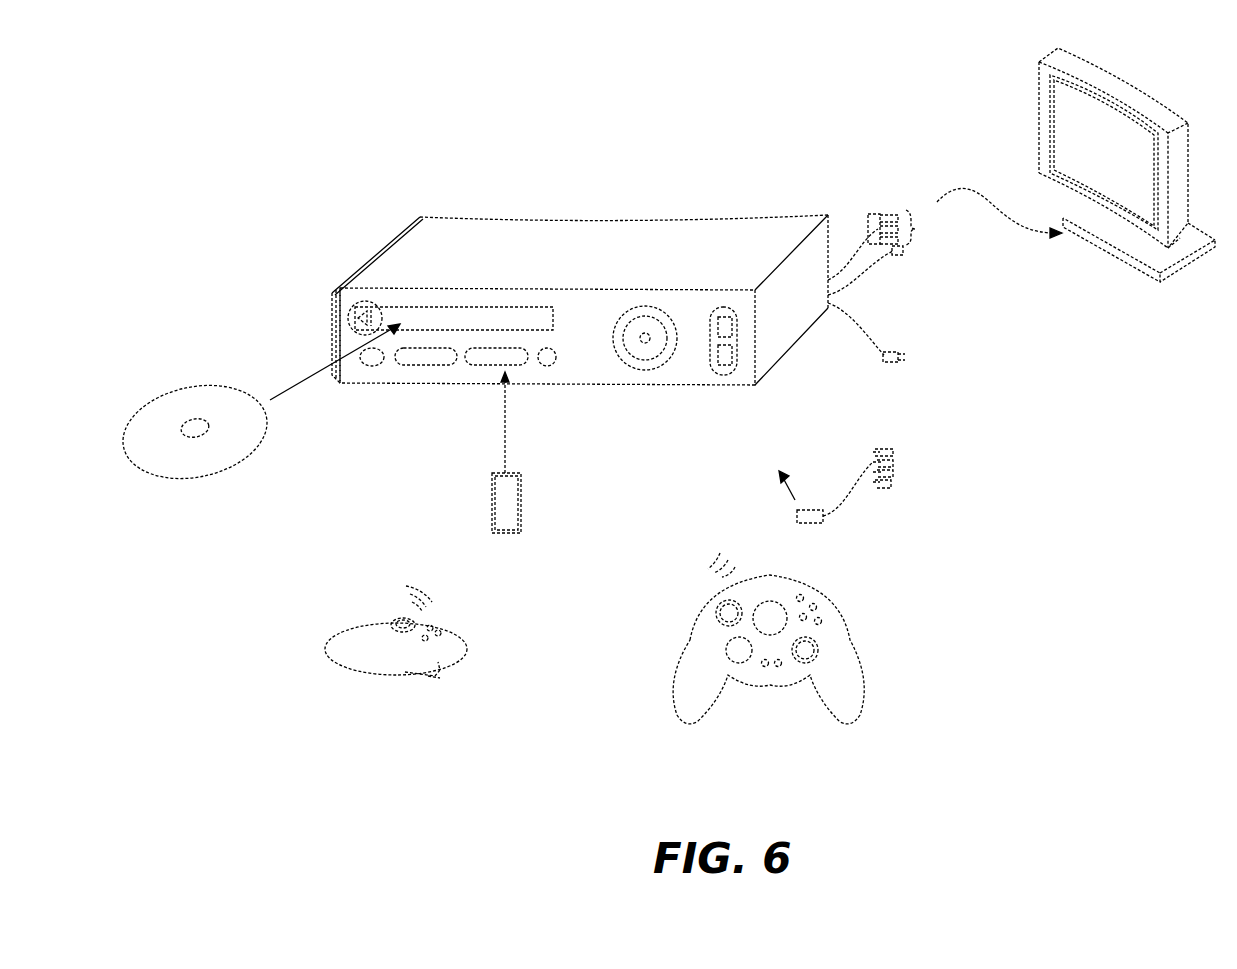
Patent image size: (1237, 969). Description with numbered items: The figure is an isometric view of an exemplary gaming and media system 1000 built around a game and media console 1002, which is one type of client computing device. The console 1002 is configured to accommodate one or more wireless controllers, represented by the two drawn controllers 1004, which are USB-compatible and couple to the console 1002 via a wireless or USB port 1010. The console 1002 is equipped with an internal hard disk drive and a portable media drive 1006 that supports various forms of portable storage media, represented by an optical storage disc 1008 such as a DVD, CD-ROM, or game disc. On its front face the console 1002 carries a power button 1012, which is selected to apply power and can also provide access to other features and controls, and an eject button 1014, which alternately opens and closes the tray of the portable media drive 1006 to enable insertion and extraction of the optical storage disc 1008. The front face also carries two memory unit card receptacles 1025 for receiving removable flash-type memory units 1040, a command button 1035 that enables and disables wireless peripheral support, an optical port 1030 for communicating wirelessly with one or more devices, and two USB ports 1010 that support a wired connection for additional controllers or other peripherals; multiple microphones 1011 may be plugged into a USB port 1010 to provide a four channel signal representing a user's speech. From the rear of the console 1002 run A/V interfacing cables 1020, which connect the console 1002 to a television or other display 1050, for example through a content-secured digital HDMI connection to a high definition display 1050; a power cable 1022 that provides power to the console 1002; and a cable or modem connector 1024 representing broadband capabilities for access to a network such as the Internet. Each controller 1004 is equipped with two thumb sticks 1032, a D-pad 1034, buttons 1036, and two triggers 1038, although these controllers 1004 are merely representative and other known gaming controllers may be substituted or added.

The gaming and media system 1000 is at (612, 180).
The game and media console 1002 is at (453, 227).
The controllers 1004 is at (353, 672).
The portable media drive 1006 is at (475, 307).
The optical storage disc 1008 is at (203, 477).
The USB ports 1010 is at (737, 347).
The microphones 1011 is at (900, 451).
The power button 1012 is at (645, 370).
The eject button 1014 is at (352, 314).
The A/V interfacing cables 1020 is at (887, 213).
The power cable 1022 is at (888, 362).
The cable or modem connector 1024 is at (897, 256).
The memory unit card receptacles 1025 is at (473, 366).
The optical port 1030 is at (373, 363).
The thumb sticks 1032 is at (402, 619).
The D-pad 1034 is at (725, 650).
The command button 1035 is at (546, 366).
The buttons 1036 is at (818, 606).
The triggers 1038 is at (435, 690).
The removable flash-type memory units 1040 is at (507, 533).
The display 1050 is at (1039, 120).